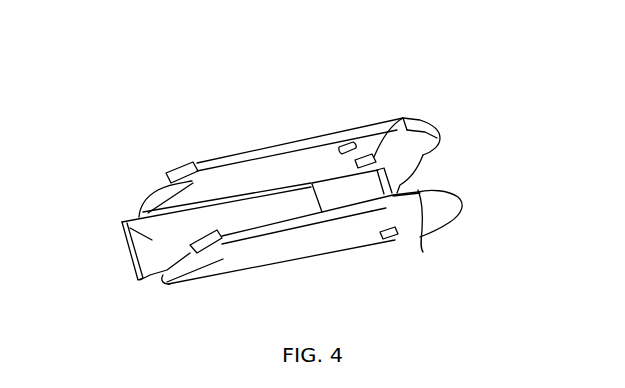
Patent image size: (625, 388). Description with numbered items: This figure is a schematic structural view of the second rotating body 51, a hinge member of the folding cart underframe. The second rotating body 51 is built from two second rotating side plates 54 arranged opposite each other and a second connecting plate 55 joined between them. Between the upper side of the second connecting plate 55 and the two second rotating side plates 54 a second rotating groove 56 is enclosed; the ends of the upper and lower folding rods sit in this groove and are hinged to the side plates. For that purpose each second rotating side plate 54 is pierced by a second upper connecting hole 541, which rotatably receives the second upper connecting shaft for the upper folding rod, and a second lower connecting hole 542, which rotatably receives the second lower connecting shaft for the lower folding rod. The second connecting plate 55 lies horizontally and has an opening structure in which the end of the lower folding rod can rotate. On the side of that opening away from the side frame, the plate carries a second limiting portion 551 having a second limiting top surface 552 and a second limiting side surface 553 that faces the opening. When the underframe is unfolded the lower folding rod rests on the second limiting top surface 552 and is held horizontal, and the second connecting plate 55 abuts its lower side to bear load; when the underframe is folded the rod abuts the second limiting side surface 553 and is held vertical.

The second rotating body 51 is at (266, 208).
The second rotating side plate 54 is at (325, 134).
The second upper connecting hole 541 is at (340, 143).
The second lower connecting hole 542 is at (407, 120).
The second rotating groove 56 is at (437, 133).
The second connecting plate 55 is at (123, 222).
The second limiting portion 551 is at (407, 187).
The second limiting top surface 552 is at (423, 250).
The second limiting side surface 553 is at (397, 230).